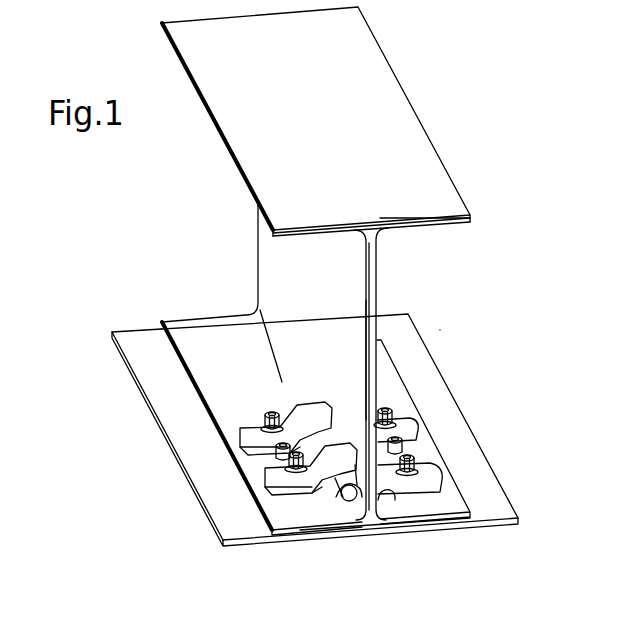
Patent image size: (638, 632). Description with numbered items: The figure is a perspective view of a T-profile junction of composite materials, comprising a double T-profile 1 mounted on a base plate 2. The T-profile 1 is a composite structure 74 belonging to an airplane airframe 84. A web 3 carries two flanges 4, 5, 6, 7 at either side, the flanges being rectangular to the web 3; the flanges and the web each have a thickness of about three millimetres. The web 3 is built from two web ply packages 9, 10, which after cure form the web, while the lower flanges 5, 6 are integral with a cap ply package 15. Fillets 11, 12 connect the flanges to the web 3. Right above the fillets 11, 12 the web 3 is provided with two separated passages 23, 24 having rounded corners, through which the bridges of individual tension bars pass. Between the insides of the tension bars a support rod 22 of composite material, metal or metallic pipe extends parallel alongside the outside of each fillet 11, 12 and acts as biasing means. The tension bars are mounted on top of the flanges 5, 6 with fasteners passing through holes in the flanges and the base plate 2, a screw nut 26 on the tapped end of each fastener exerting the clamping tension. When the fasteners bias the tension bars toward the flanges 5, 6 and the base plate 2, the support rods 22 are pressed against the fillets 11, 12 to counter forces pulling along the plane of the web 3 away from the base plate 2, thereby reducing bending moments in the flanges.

The double T-profile 1 is at (496, 320).
The base plate 2 is at (500, 508).
The web 3 is at (386, 262).
The flange 4 is at (455, 225).
The flange 5 is at (448, 502).
The flange 6 is at (283, 512).
The flange 7 is at (285, 238).
The web ply package 9 is at (377, 276).
The web ply package 10 is at (366, 257).
The fillet 11 is at (386, 505).
The fillet 12 is at (346, 512).
The cap ply package 15 is at (455, 518).
The support rod 22 is at (333, 498).
The passage 23 is at (340, 440).
The passage 24 is at (312, 398).
The screw nut 26 is at (393, 417).
The composite structure 74 is at (240, 390).
The airplane airframe 84 is at (262, 390).